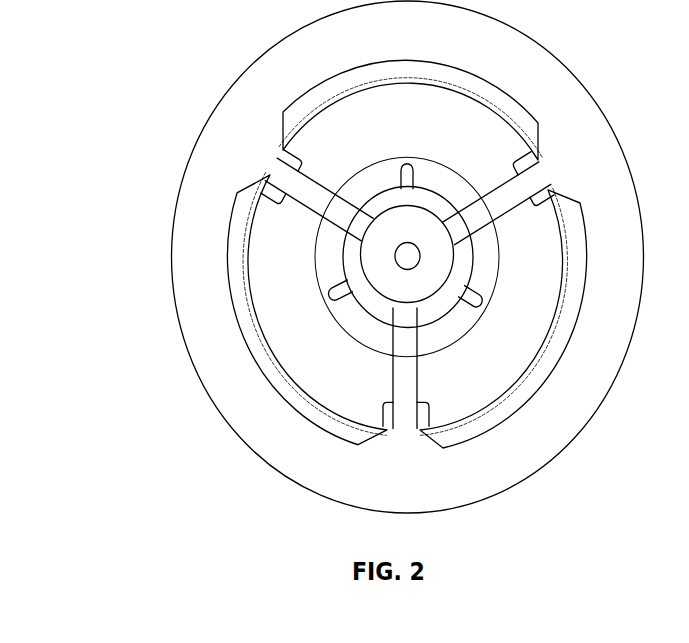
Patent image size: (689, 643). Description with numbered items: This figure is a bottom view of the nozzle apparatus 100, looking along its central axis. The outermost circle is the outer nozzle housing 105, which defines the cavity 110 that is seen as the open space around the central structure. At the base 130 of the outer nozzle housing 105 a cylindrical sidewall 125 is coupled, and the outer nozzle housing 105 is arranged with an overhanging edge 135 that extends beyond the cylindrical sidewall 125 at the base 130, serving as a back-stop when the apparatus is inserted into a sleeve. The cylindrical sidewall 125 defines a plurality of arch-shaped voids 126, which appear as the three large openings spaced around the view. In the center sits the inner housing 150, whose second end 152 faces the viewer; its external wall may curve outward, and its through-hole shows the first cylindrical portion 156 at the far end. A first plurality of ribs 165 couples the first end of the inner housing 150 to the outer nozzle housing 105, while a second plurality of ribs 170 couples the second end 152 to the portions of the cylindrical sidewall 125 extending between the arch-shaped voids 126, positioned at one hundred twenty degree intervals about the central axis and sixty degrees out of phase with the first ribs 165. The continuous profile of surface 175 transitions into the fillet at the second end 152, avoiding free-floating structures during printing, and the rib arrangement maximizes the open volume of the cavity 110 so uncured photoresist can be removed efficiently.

The nozzle apparatus 100 is at (186, 76).
The outer nozzle housing 105 is at (196, 135).
The cavity 110 is at (283, 272).
The cylindrical sidewall 125 is at (257, 158).
The arch-shaped voids 126 is at (335, 292).
The base 130 is at (193, 215).
The overhanging edge 135 is at (297, 257).
The inner housing 150 is at (343, 239).
The second end 152 is at (394, 316).
The first cylindrical portion 156 is at (396, 257).
The first plurality of ribs 165 is at (403, 176).
The second plurality of ribs 170 is at (387, 402).
The surface 175 is at (395, 370).